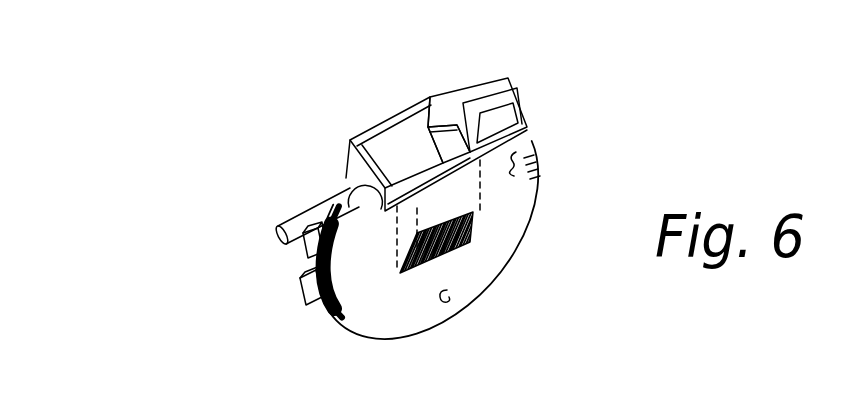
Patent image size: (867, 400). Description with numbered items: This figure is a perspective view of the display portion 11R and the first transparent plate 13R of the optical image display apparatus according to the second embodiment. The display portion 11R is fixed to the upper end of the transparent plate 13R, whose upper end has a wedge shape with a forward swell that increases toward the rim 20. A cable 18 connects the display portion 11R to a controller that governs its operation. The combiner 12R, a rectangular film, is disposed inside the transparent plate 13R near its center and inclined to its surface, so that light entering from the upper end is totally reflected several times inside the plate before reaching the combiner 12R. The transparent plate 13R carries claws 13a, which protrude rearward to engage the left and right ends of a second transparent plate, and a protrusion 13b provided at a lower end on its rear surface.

The display portion 11R is at (463, 110).
The combiner 12R is at (458, 242).
The transparent plate 13R is at (517, 222).
The claws 13a is at (308, 292).
The protrusion 13b is at (448, 302).
The cable 18 is at (318, 217).
The rim 20 is at (320, 312).